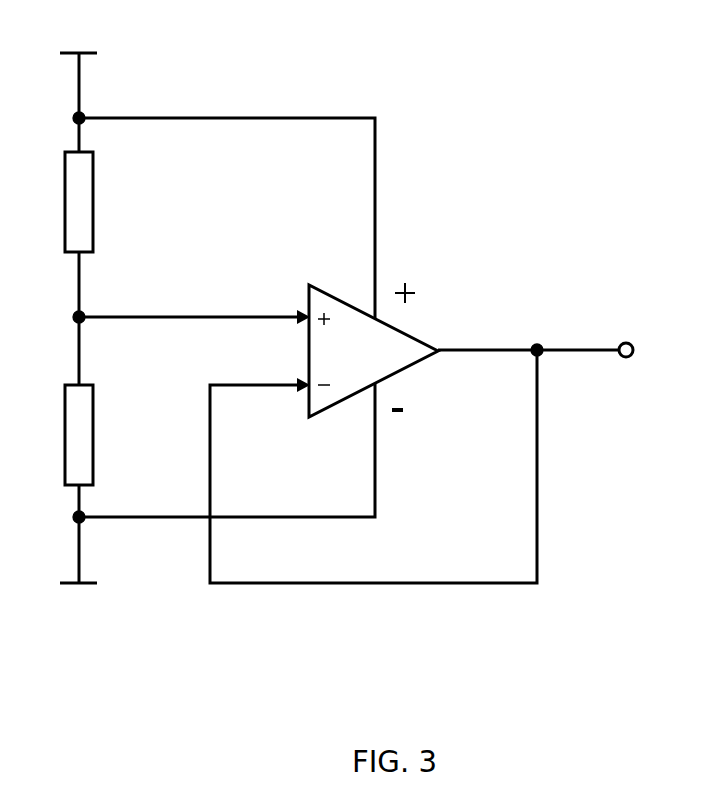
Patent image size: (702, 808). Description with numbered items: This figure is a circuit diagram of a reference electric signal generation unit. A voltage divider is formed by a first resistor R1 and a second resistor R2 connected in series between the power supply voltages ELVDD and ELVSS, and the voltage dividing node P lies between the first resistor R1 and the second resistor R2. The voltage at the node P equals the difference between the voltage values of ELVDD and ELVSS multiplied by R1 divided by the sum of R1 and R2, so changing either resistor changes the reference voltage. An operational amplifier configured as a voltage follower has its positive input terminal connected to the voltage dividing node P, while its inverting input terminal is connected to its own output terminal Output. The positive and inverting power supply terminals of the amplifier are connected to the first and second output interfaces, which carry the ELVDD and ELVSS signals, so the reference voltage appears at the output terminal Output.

The element ELVDD is at (97, 85).
The first resistor R1 is at (58, 202).
The voltage dividing node P is at (171, 315).
The second resistor R2 is at (58, 435).
The element ELVSS is at (85, 552).
The output terminal Output is at (567, 320).